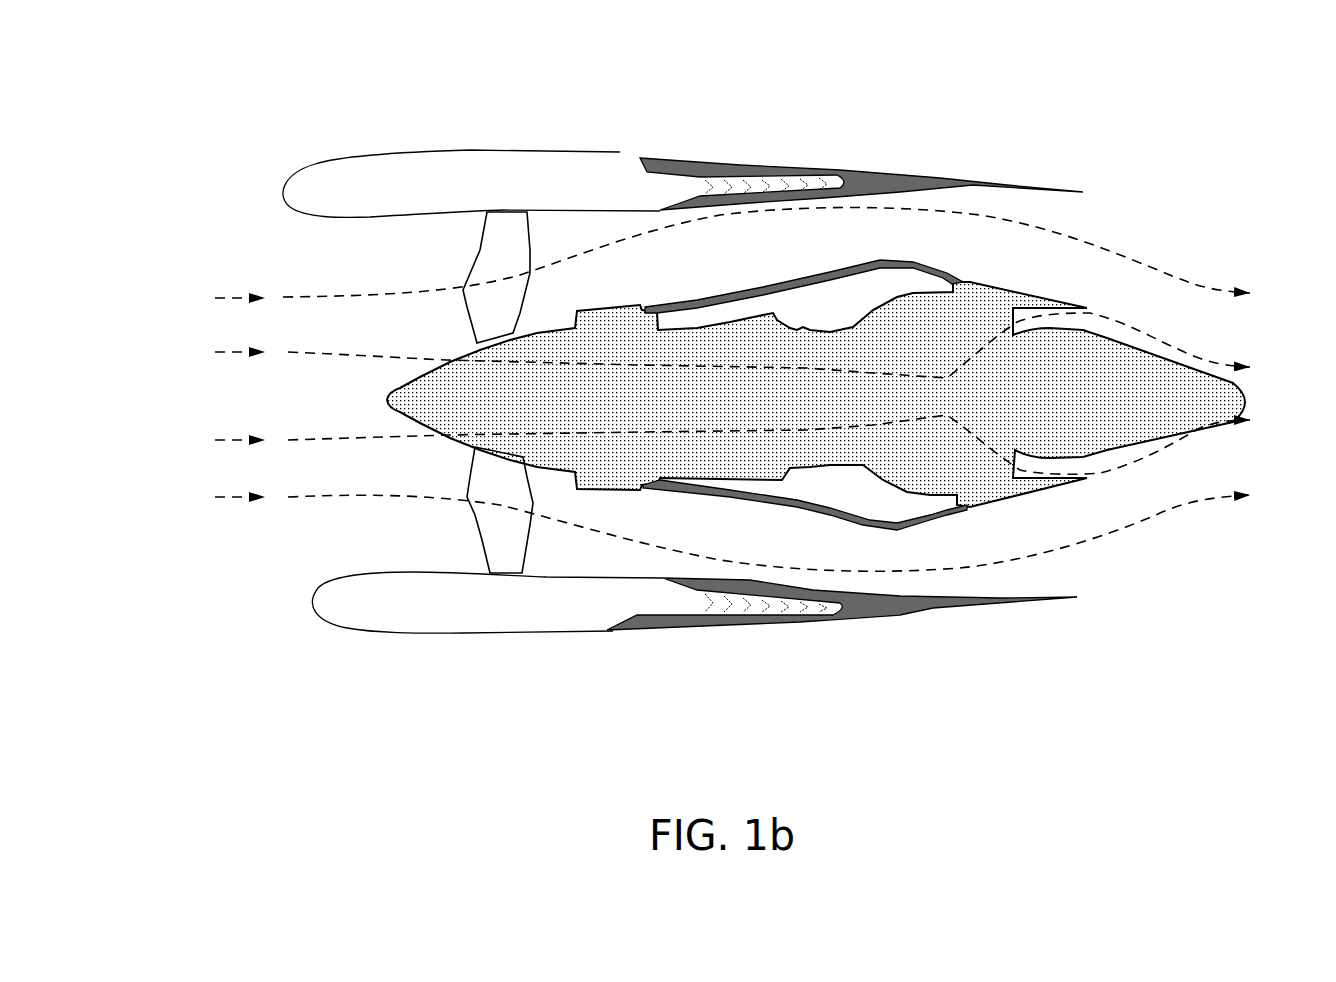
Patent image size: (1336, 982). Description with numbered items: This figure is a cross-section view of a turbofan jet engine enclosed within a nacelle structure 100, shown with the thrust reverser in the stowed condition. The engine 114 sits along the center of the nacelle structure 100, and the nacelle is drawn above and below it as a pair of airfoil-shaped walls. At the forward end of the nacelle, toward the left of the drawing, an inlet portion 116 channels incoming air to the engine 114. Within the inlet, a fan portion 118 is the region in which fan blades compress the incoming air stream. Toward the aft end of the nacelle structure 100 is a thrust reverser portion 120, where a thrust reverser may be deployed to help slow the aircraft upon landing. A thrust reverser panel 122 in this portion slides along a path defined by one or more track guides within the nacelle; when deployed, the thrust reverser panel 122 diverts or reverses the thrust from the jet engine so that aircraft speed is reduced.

The nacelle structure 100 is at (574, 151).
The engine 114 is at (410, 385).
The inlet portion 116 is at (257, 537).
The fan portion 118 is at (510, 245).
The thrust reverser portion 120 is at (790, 640).
The thrust reverser panel 122 is at (890, 622).